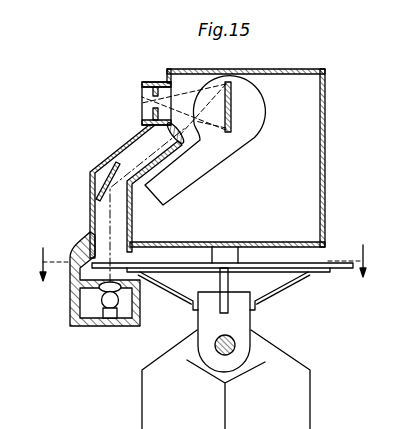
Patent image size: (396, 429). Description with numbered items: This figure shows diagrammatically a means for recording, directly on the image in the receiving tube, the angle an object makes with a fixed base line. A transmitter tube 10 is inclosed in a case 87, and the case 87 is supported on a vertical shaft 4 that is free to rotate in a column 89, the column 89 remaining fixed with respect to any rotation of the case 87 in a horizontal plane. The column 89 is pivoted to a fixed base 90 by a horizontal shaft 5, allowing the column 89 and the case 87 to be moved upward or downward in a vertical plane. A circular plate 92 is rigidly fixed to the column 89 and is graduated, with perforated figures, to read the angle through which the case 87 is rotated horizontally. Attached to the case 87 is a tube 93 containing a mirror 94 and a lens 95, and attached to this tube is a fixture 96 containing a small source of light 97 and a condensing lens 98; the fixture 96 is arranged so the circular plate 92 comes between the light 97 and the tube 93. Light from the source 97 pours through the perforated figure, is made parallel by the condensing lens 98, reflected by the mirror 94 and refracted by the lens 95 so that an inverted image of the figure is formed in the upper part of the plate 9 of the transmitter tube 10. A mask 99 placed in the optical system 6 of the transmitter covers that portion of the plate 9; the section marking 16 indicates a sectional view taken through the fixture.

The case 87 is at (283, 69).
The mask 99 is at (156, 82).
The optical system 6 is at (142, 84).
The transmitter tube 10 is at (265, 100).
The plate 9 is at (231, 112).
The lens 95 is at (183, 157).
The tube 93 is at (89, 208).
The mirror 94 is at (114, 163).
The vertical shaft 4 is at (233, 242).
The circular plate 92 is at (344, 269).
The column 89 is at (253, 321).
The horizontal shaft 5 is at (220, 353).
The fixed base 90 is at (312, 401).
The fixture 96 is at (84, 326).
The condensing lens 98 is at (121, 296).
The source of light 97 is at (122, 319).
The section line 16- 16 is at (205, 263).